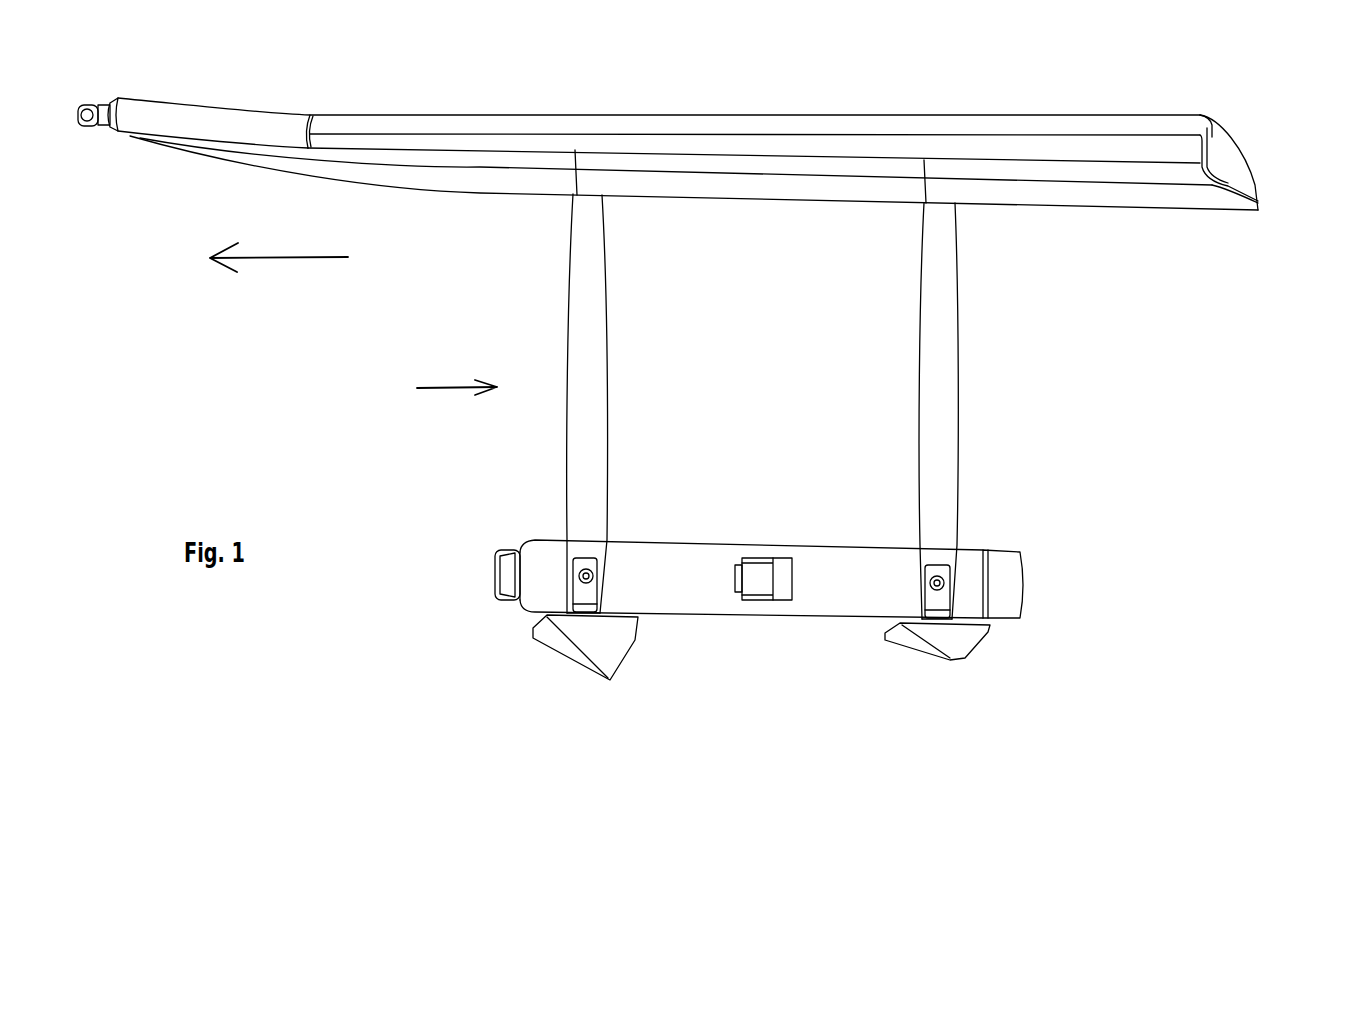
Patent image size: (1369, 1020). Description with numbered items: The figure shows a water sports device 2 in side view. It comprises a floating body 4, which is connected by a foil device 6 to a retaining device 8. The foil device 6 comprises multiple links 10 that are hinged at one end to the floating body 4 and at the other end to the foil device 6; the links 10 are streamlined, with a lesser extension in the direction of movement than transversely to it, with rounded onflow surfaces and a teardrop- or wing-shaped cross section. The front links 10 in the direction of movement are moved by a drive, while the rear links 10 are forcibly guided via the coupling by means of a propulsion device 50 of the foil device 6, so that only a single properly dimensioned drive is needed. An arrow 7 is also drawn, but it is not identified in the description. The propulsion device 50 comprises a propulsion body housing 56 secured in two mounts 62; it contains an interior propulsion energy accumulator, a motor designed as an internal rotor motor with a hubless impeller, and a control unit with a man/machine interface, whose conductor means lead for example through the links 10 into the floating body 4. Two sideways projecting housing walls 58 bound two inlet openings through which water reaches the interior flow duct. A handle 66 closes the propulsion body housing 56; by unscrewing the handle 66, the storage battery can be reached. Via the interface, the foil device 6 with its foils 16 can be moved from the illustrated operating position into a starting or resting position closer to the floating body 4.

The water sports device 2 is at (1228, 447).
The floating body 4 is at (478, 170).
The foil device 6 is at (438, 388).
The rearward direction arrow 7 is at (279, 235).
The retaining device 8 is at (481, 680).
The links 10 is at (583, 447).
The foils 16 is at (588, 645).
The propulsion device 50 is at (768, 666).
The propulsion body housing 56 is at (973, 570).
The housing walls 58 is at (760, 577).
The mounts 62 is at (585, 601).
The handle 66 is at (503, 547).